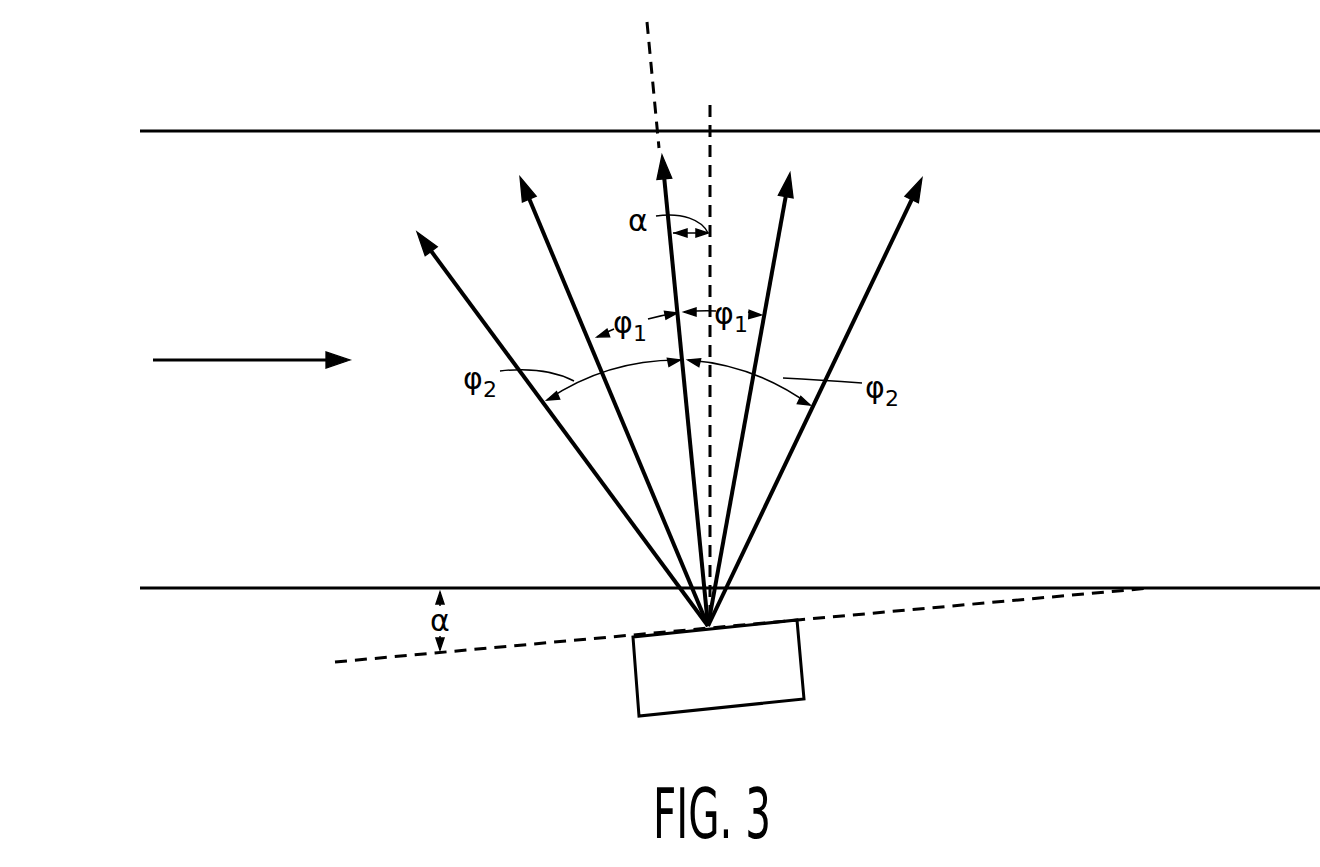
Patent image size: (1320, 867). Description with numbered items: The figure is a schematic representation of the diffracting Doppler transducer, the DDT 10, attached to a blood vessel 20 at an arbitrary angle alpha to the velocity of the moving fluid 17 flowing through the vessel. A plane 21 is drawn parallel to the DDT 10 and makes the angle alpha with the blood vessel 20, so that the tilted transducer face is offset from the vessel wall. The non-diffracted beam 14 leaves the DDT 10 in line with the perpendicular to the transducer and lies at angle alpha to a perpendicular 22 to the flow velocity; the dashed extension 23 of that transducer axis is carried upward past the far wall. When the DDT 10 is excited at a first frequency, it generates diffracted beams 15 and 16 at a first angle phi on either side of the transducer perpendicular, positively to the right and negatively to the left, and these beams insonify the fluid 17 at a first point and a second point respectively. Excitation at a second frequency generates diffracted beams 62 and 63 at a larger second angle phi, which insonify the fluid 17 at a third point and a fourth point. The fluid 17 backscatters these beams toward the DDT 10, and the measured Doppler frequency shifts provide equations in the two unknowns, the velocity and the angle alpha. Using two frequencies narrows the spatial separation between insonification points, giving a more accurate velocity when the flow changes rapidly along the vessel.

The DDT 10 is at (781, 690).
The non-diffracted beam 14 is at (660, 200).
The diffracted beam 15 is at (784, 219).
The diffracted beam 16 is at (557, 262).
The moving fluid 17 is at (266, 358).
The blood vessel 20 is at (1151, 131).
The plane 21 is at (390, 663).
The perpendicular to the flow velocity 22 is at (714, 168).
The transducer axis extension 23 is at (652, 42).
The diffracted beam 62 is at (893, 239).
The diffracted beam 63 is at (447, 277).